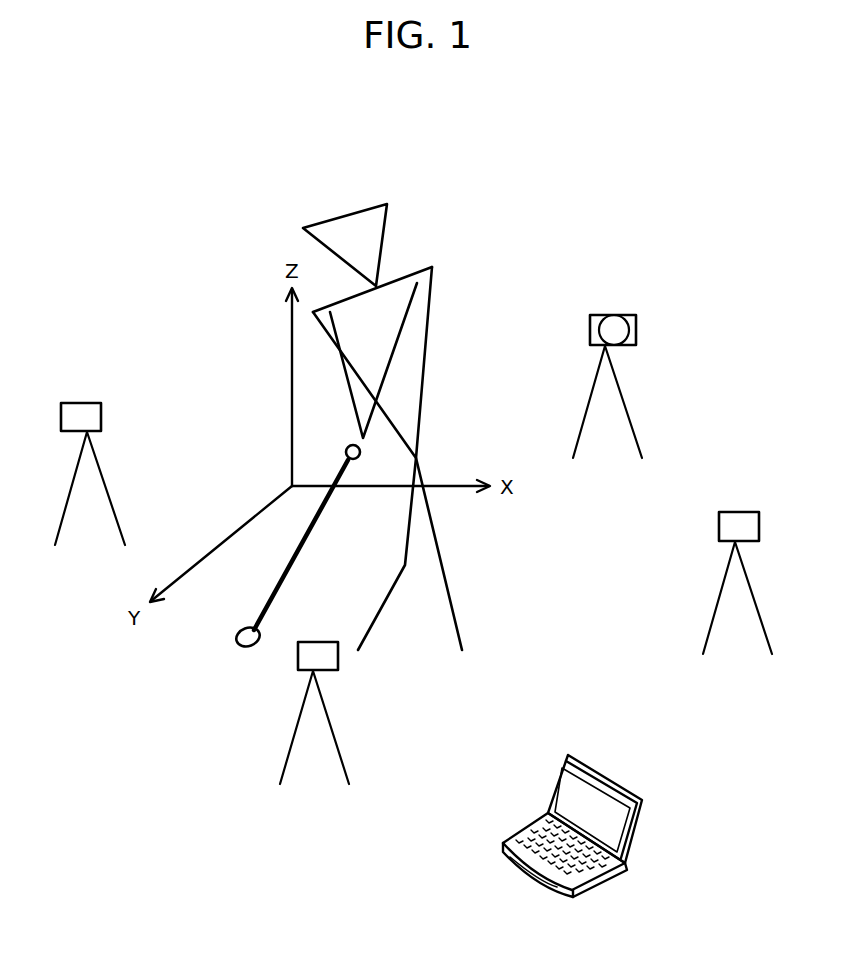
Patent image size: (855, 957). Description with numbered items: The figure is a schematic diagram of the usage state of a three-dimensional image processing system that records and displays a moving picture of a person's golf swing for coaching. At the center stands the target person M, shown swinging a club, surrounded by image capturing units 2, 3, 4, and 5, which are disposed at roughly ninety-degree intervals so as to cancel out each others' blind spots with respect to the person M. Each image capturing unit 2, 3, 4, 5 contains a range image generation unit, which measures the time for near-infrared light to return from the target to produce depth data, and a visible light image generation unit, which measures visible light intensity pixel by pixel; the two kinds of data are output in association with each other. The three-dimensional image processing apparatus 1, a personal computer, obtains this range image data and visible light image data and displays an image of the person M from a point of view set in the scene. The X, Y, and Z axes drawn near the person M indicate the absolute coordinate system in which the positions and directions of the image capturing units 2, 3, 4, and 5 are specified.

The three-dimensional image processing apparatus 1 is at (625, 783).
The image capturing unit 2 is at (632, 315).
The image capturing unit 3 is at (752, 512).
The image capturing unit 4 is at (338, 662).
The image capturing unit 5 is at (73, 402).
The target person M is at (428, 330).